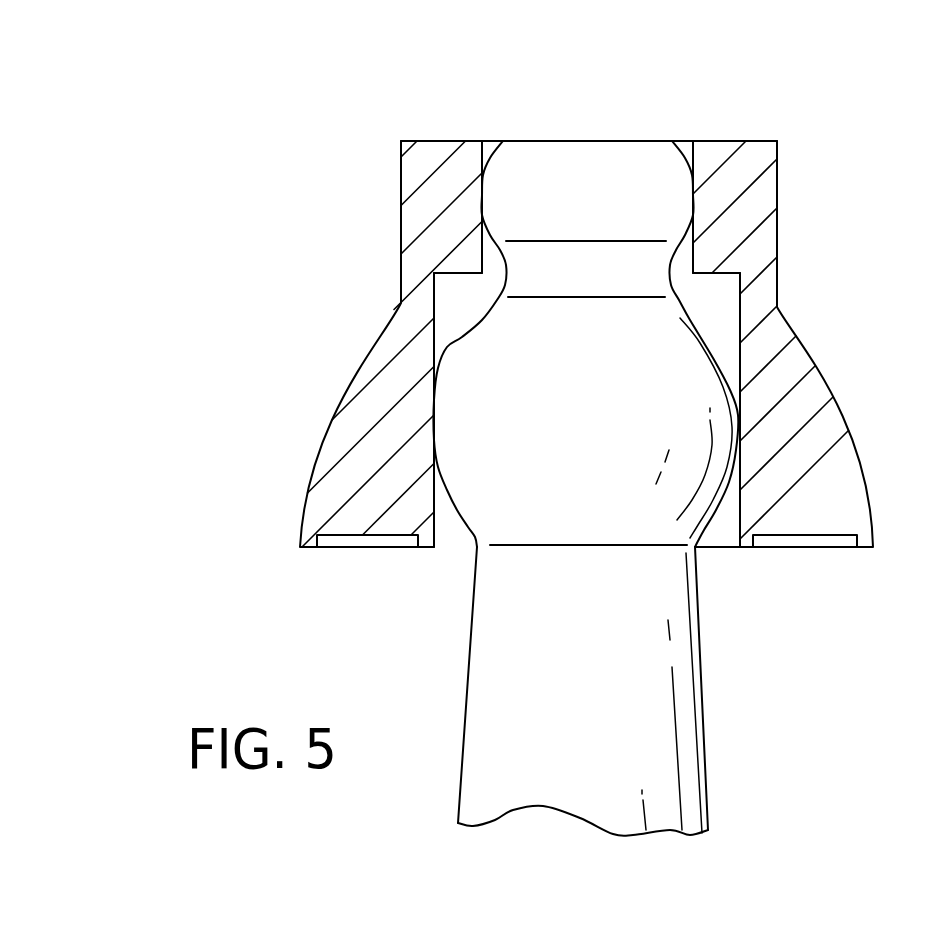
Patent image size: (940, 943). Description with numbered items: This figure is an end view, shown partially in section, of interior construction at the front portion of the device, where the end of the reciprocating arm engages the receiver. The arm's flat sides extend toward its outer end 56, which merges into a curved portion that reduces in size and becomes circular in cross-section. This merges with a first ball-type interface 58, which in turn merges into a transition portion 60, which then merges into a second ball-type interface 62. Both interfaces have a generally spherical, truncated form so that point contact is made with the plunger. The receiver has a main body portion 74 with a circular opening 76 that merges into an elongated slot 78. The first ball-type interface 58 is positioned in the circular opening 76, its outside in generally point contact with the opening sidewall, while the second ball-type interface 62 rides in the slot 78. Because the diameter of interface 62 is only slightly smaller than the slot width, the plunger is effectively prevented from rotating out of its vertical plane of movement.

The outer end 56 is at (533, 646).
The first ball-type interface 58 is at (500, 427).
The transition portion 60 is at (588, 267).
The second ball-type interface 62 is at (545, 195).
The main body portion 74 is at (735, 141).
The circular opening 76 is at (437, 345).
The elongated slot 78 is at (690, 155).